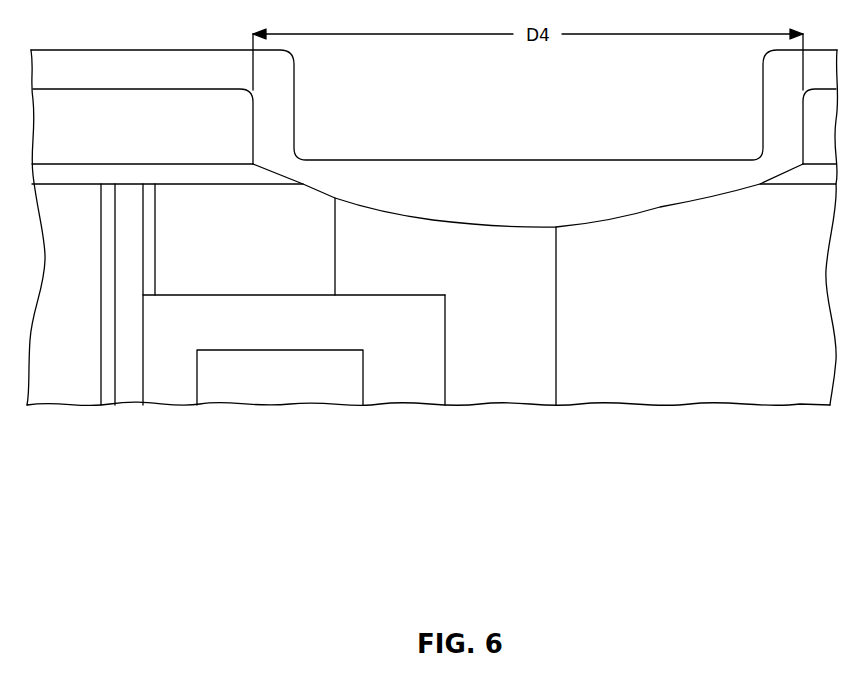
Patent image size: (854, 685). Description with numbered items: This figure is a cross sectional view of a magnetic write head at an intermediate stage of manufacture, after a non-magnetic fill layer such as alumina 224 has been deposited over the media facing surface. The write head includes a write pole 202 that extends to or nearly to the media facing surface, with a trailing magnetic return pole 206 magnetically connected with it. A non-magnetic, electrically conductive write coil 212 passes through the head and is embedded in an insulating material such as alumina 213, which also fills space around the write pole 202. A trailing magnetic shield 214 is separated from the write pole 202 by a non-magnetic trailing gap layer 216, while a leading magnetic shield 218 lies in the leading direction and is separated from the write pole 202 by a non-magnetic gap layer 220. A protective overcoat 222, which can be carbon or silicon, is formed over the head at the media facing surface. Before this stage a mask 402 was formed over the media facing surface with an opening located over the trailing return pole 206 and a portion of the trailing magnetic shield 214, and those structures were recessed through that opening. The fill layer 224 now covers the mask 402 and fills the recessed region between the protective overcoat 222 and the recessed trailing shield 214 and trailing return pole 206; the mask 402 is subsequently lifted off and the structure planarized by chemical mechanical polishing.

The write pole 202 is at (130, 273).
The trailing magnetic return pole 206 is at (479, 258).
The write coil 212 is at (303, 375).
The alumina 213 is at (312, 321).
The trailing magnetic shield 214 is at (251, 235).
The non-magnetic trailing gap layer 216 is at (150, 198).
The leading magnetic shield 218 is at (93, 364).
The non-magnetic gap layer 220 is at (109, 214).
The protective overcoat 222 is at (210, 176).
The fill layer 224 is at (438, 166).
The mask 402 is at (132, 121).